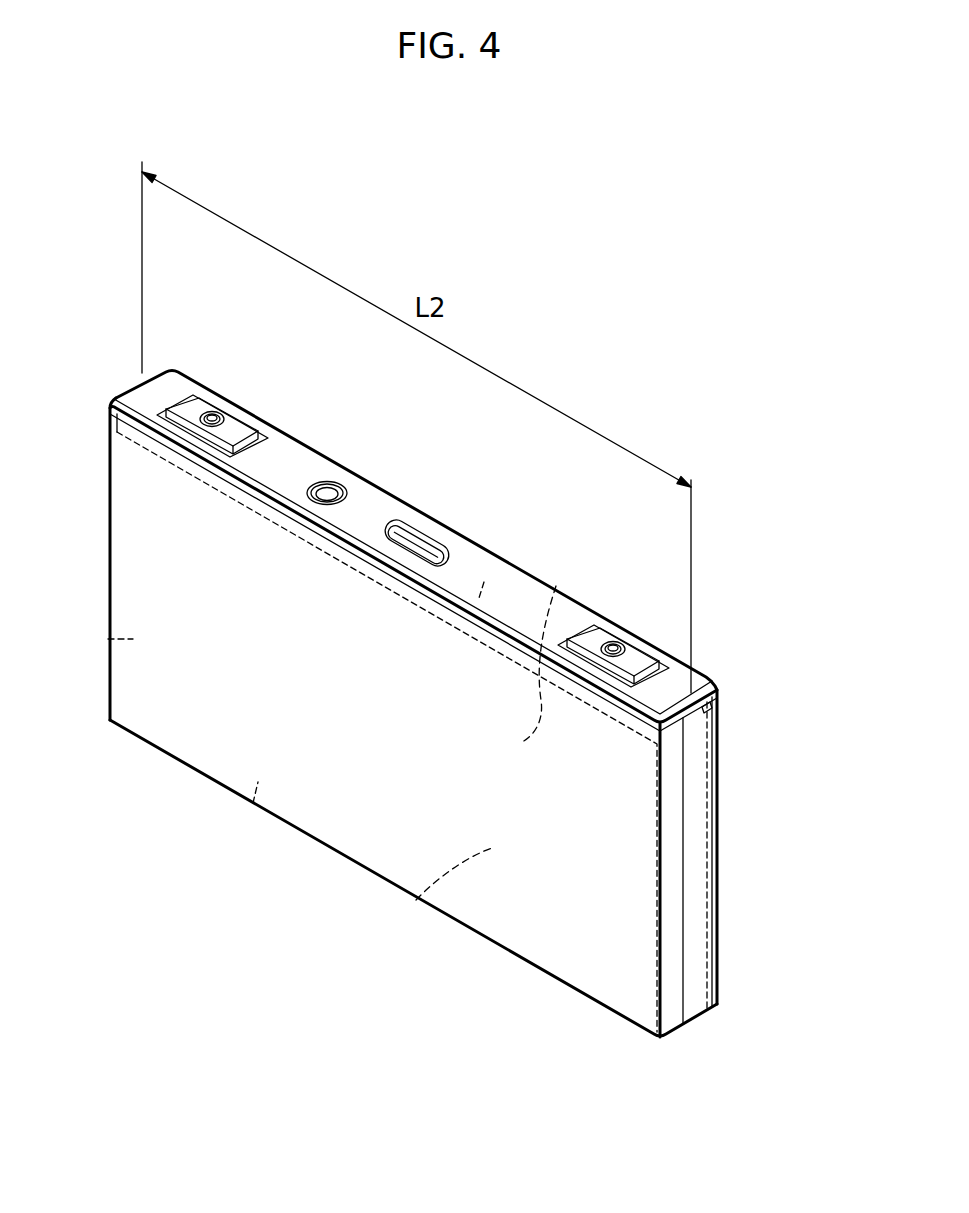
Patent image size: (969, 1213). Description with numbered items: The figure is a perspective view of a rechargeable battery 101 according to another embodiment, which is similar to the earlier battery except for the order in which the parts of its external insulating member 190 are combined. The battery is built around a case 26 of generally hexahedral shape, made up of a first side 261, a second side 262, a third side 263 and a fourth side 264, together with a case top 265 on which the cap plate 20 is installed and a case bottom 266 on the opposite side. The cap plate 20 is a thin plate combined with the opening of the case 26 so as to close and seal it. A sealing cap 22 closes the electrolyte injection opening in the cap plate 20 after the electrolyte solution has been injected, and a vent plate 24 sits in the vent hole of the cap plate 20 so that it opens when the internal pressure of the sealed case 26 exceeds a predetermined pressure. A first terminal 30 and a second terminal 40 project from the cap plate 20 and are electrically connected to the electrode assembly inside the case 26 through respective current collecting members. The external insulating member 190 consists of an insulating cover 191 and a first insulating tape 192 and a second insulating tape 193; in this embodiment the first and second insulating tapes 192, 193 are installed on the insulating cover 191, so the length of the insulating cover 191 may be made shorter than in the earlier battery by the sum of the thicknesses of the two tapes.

The rechargeable battery 101 is at (553, 272).
The cap plate 20 is at (387, 492).
The sealing cap 22 is at (328, 492).
The vent plate 24 is at (420, 545).
The case 26 is at (340, 853).
The first terminal 30 is at (208, 403).
The second terminal 40 is at (607, 630).
The external insulating member 190 is at (795, 732).
The insulating cover 191 is at (707, 703).
The first insulating tape 192 is at (710, 822).
The second insulating tape 193 is at (673, 787).
The first side 261 is at (416, 900).
The second side 262 is at (675, 890).
The third side 263 is at (556, 586).
The fourth side 264 is at (108, 640).
The case top 265 is at (484, 582).
The case bottom 266 is at (253, 804).